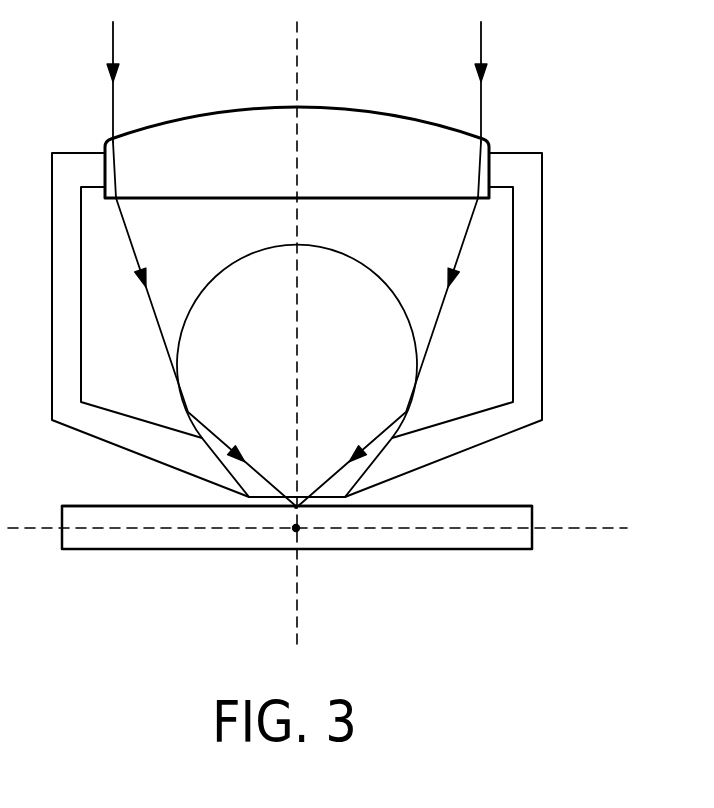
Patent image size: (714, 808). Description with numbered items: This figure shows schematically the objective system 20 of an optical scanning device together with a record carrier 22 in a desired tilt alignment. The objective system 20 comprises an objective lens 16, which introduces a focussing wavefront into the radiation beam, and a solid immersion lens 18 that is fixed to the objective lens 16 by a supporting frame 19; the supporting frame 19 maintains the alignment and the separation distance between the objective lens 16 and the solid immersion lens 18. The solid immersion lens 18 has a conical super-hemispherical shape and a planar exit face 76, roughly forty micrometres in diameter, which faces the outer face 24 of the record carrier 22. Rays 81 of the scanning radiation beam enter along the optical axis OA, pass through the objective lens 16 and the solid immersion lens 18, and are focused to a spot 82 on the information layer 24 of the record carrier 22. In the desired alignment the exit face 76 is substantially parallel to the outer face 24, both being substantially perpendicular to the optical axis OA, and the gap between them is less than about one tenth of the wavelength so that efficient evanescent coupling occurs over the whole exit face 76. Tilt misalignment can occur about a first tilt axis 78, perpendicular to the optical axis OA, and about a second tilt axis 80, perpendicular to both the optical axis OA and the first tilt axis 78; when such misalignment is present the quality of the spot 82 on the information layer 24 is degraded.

The rays of a scanning radiation beam 81 is at (112, 95).
The objective lens 16 is at (412, 127).
The objective system 20 is at (545, 179).
The supporting frame 19 is at (533, 248).
The solid immersion lens 18 is at (373, 448).
The exit face 76 is at (265, 495).
The information layer 24 is at (512, 505).
The second tilt axis 80 is at (597, 527).
The record carrier 22 is at (492, 538).
The spot 82 is at (290, 510).
The first tilt axis 78 is at (300, 532).
The optical axis OA is at (296, 625).